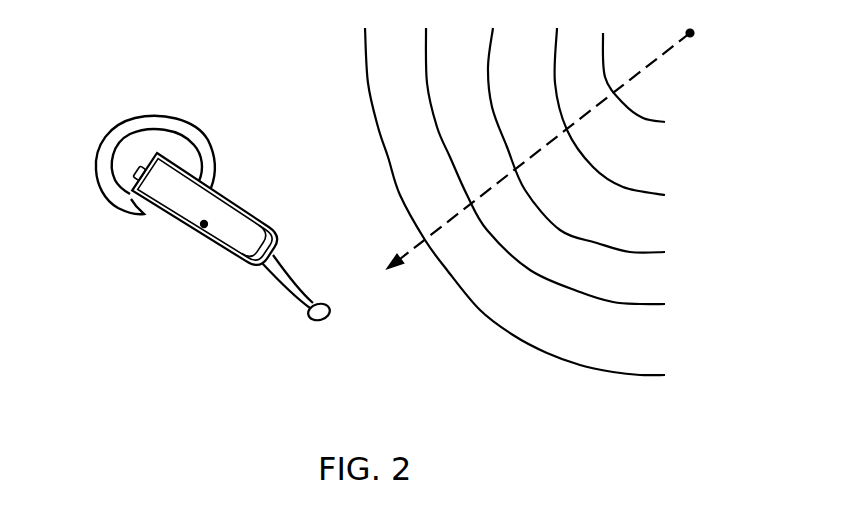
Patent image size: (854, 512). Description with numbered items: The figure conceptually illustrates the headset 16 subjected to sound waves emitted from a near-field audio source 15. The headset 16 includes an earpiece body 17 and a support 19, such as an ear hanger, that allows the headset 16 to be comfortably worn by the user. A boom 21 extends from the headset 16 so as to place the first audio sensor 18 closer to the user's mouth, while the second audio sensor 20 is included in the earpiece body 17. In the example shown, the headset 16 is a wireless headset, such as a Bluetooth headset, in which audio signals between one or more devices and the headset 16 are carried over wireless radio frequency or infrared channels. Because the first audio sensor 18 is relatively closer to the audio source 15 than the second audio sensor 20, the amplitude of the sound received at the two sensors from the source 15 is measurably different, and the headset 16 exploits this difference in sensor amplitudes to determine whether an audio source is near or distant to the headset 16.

The near-field audio source 15 is at (690, 33).
The headset 16 is at (230, 198).
The earpiece body 17 is at (218, 252).
The first audio sensor 18 is at (203, 228).
The support 19 is at (151, 118).
The second audio sensor 20 is at (318, 322).
The boom 21 is at (300, 297).